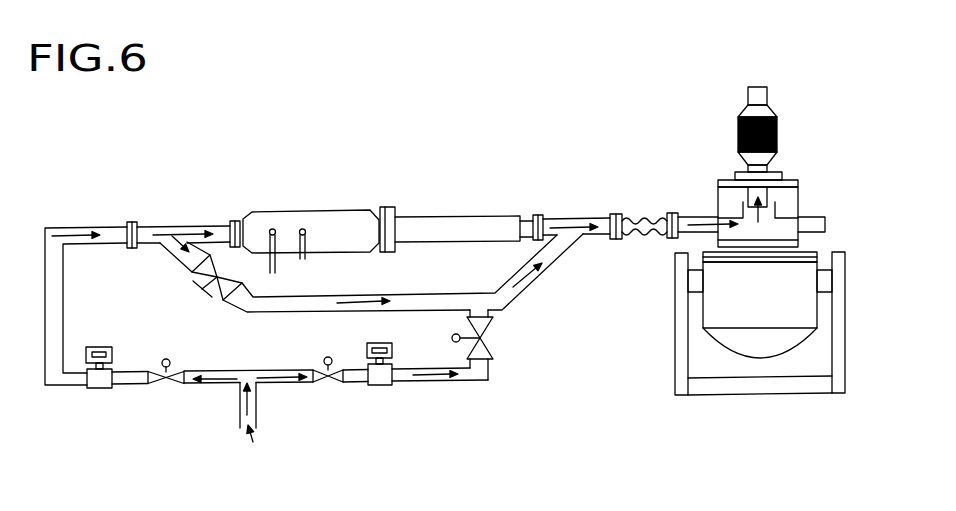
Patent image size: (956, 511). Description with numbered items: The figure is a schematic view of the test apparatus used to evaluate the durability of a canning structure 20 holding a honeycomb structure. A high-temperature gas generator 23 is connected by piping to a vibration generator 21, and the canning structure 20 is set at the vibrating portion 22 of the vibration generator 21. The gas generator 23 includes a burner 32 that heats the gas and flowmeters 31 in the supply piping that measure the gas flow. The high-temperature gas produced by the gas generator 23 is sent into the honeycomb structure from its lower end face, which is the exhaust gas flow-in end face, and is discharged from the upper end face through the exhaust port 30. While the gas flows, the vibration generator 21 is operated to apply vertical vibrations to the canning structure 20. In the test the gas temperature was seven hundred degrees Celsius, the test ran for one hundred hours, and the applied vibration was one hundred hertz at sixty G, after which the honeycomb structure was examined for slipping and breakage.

The canning structure 20 is at (738, 137).
The vibration generator 21 is at (847, 226).
The vibrating portion 22 is at (760, 123).
The high-temperature gas generator 23 is at (512, 193).
The exhaust port 30 is at (750, 93).
The flowmeter 31 is at (100, 383).
The burner 32 is at (273, 230).